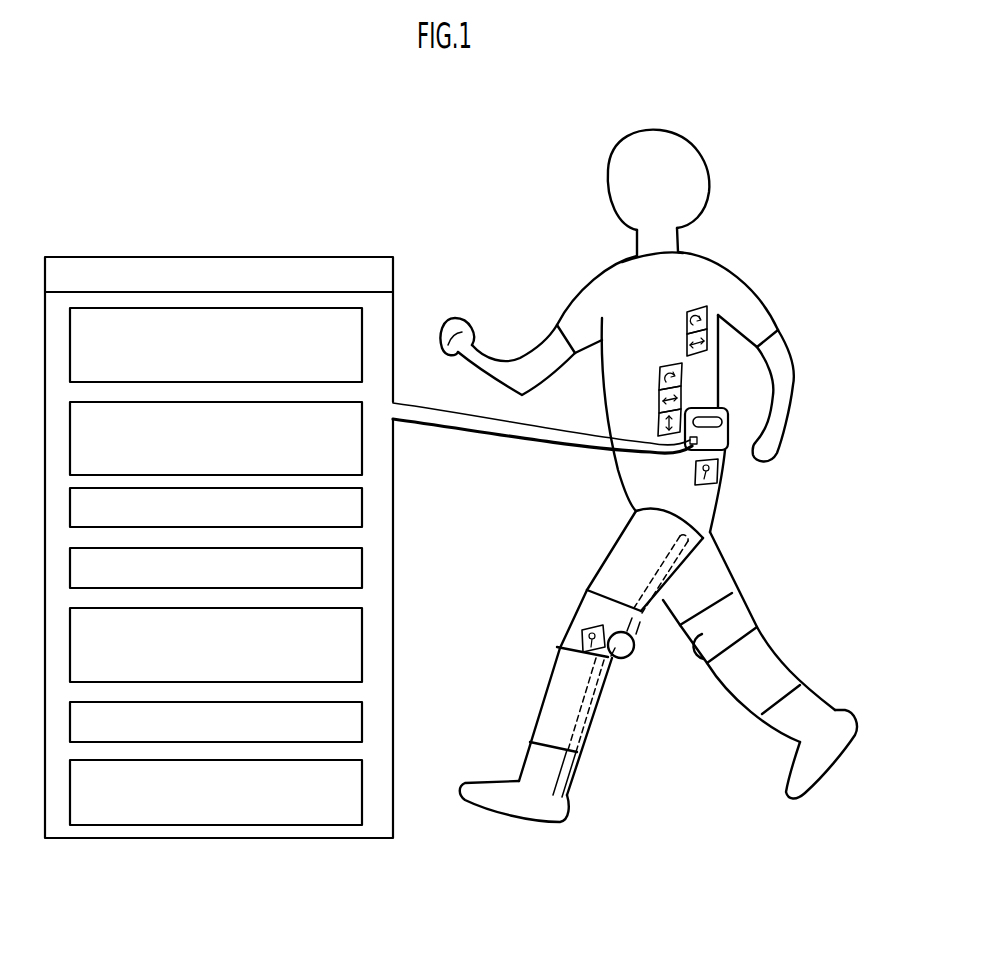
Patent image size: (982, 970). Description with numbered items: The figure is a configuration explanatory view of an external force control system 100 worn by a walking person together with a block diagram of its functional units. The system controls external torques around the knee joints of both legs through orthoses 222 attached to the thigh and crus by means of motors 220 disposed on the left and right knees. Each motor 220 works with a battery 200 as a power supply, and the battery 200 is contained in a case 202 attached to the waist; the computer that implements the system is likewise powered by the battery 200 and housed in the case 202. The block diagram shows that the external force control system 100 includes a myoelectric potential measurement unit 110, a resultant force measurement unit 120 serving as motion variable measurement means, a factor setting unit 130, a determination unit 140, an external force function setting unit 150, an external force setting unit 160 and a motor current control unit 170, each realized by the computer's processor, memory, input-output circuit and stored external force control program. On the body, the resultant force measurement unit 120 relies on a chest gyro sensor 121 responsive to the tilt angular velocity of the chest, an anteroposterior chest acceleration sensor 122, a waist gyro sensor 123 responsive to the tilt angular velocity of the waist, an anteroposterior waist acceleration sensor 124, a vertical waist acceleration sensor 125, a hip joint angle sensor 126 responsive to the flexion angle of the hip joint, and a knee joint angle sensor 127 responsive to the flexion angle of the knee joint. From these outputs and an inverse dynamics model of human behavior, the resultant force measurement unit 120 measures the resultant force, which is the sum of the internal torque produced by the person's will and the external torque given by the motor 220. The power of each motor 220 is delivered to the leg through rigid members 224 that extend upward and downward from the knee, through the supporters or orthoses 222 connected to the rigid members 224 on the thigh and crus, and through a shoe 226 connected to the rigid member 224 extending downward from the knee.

The external force control system 100 is at (367, 257).
The myoelectric potential measurement unit 110 is at (362, 331).
The resultant force measurement unit 120 is at (362, 450).
The factor setting unit 130 is at (362, 502).
The determination unit 140 is at (362, 565).
The external force function setting unit 150 is at (362, 628).
The external force setting unit 160 is at (362, 720).
The motor current control unit 170 is at (362, 780).
The chest gyro sensor 121 is at (707, 318).
The anteroposterior chest acceleration sensor 122 is at (707, 340).
The waist gyro sensor 123 is at (683, 372).
The anteroposterior waist acceleration sensor 124 is at (682, 396).
The vertical waist acceleration sensor 125 is at (681, 418).
The hip joint angle sensor 126 is at (718, 470).
The knee joint angle sensor 127 is at (583, 628).
The battery 200 is at (773, 455).
The case 202 is at (728, 440).
The motor 220 is at (632, 657).
The orthosis 222 is at (628, 559).
The rigid member 224 is at (655, 614).
The shoe 226 is at (485, 783).